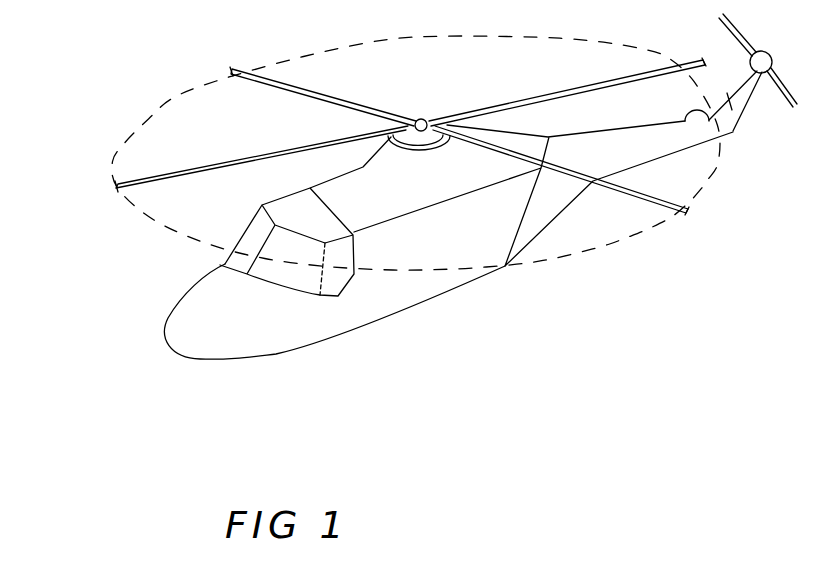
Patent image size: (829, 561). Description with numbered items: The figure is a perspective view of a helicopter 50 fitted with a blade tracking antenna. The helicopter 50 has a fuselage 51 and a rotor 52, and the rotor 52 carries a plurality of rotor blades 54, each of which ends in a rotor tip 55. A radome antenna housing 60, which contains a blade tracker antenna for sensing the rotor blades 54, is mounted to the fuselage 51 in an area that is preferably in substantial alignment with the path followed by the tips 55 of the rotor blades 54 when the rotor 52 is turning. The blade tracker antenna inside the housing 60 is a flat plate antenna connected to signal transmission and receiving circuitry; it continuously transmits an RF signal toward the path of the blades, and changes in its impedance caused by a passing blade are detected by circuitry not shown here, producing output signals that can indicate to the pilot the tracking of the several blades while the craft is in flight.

The helicopter 50 is at (120, 327).
The fuselage 51 is at (373, 314).
The rotor 52 is at (416, 93).
The rotor blades 54 is at (168, 177).
The rotor tip 55 is at (232, 70).
The radome antenna housing 60 is at (699, 122).